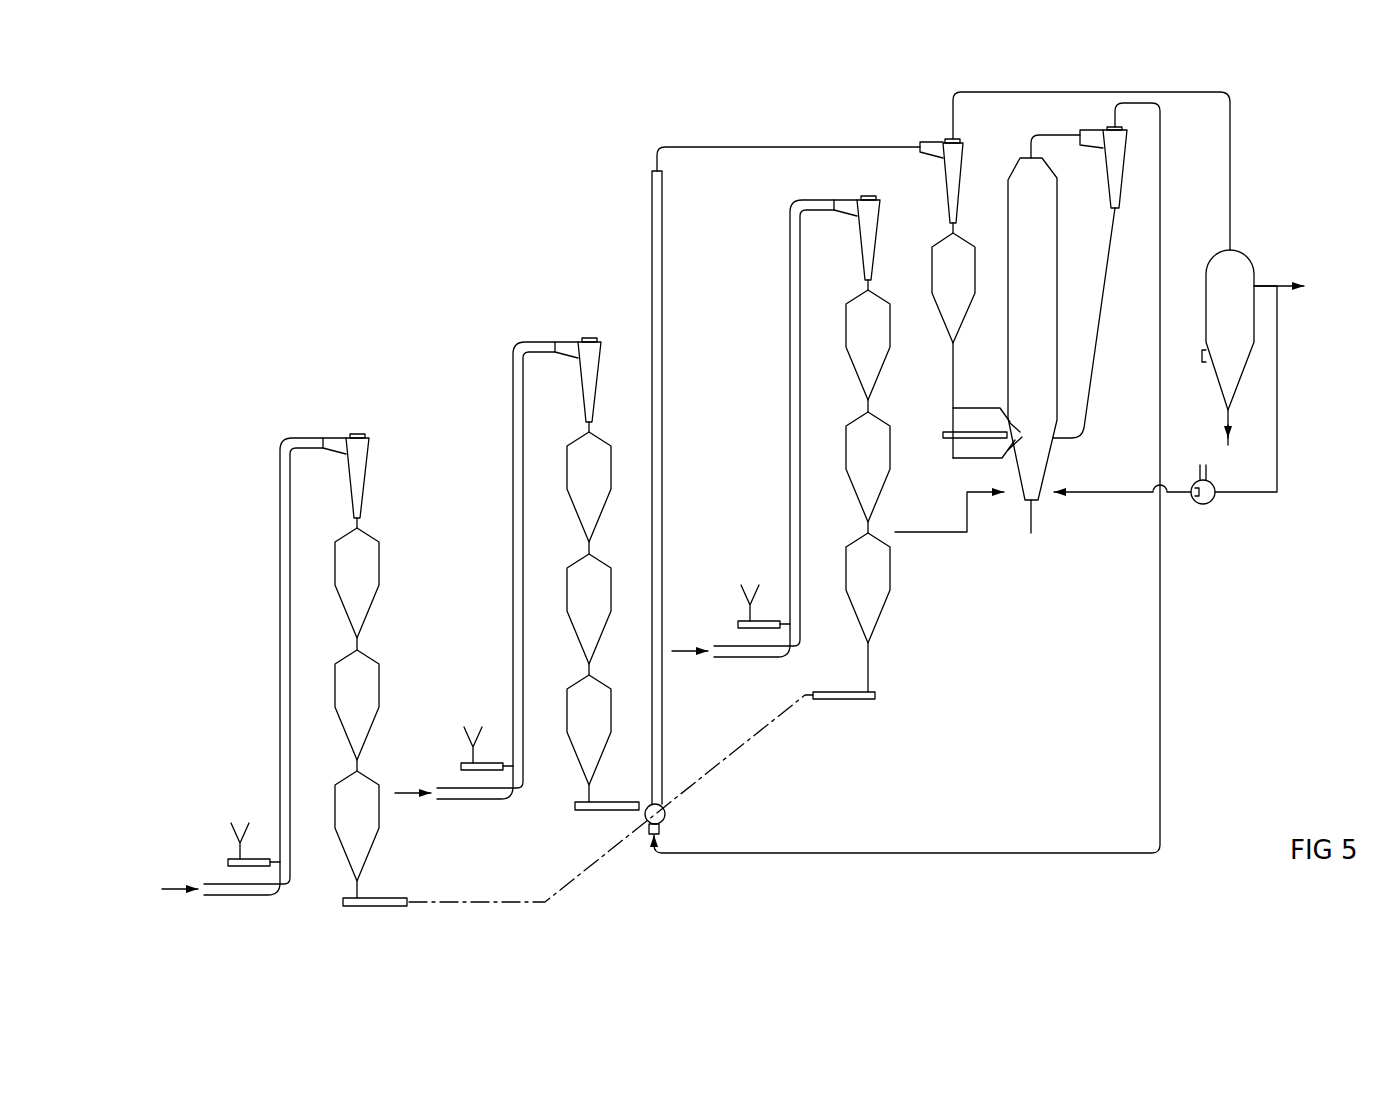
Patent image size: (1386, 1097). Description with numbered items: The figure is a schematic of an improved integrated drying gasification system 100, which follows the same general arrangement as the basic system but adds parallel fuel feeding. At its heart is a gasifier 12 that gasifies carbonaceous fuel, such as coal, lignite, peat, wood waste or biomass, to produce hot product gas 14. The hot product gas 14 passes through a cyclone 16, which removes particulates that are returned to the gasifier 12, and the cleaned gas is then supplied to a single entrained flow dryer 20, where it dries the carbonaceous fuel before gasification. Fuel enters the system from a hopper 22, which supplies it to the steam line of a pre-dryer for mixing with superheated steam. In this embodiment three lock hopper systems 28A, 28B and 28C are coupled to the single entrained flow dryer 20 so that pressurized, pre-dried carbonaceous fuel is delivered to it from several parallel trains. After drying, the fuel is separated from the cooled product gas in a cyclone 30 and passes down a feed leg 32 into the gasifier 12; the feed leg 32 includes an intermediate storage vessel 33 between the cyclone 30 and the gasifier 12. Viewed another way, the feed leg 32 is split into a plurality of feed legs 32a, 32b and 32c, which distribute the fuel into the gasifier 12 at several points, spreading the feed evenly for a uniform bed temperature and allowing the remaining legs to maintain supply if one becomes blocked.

The integrated drying gasification system 100 is at (330, 197).
The lock hopper system 28A is at (356, 401).
The lock hopper system 28B is at (549, 820).
The lock hopper system 28C is at (858, 730).
The hopper 22 is at (231, 823).
The entrained flow dryer 20 is at (658, 432).
The cyclone 30 is at (955, 160).
The intermediate storage vessel 33 is at (945, 265).
The feed leg 32 is at (953, 393).
The feed leg 32a is at (932, 437).
The feed leg 32b is at (980, 405).
The feed leg 32c is at (972, 469).
The gasifier 12 is at (1043, 242).
The hot product gas 14 is at (1033, 137).
The cyclone 16 is at (1117, 172).